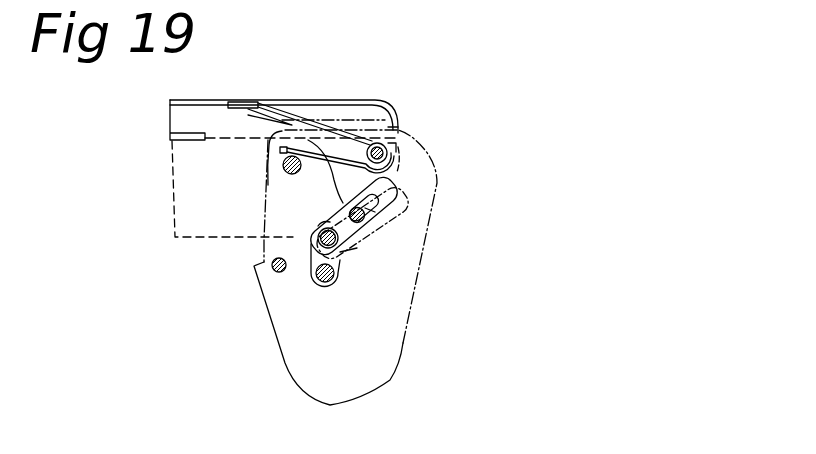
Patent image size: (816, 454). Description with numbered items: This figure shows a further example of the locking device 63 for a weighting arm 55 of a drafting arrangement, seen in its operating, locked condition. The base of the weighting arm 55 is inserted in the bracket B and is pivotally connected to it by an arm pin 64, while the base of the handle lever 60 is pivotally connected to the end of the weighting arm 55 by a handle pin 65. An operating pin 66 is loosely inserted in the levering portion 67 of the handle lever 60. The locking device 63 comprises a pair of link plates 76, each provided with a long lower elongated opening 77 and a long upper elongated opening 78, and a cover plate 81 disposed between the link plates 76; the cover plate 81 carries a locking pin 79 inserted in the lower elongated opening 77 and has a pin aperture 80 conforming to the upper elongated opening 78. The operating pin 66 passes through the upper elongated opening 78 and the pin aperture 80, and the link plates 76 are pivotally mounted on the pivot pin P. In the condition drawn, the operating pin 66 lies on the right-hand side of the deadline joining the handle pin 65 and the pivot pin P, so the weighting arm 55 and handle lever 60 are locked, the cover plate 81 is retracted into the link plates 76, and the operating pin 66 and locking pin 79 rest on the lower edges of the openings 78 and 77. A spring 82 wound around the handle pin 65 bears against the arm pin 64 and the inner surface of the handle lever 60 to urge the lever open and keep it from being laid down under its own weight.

The bracket B is at (407, 343).
The pivot pin P is at (316, 279).
The weighting arm 55 is at (176, 180).
The handle lever 60 is at (181, 88).
The locking device 63 is at (397, 180).
The arm pin 64 is at (289, 157).
The handle pin 65 is at (382, 141).
The operating pin 66 is at (373, 212).
The levering portion 67 is at (393, 162).
The link plates 76 is at (357, 248).
The lower elongated opening 77 is at (345, 222).
The upper elongated opening 78 is at (374, 203).
The locking pin 79 is at (318, 230).
The pin aperture 80 is at (353, 211).
The cover plate 81 is at (340, 252).
The spring 82 is at (305, 117).